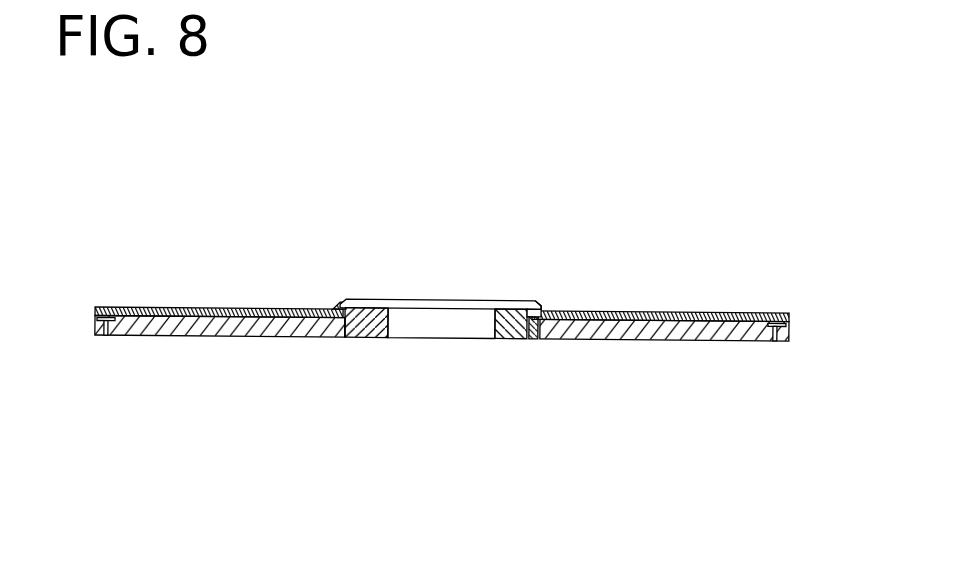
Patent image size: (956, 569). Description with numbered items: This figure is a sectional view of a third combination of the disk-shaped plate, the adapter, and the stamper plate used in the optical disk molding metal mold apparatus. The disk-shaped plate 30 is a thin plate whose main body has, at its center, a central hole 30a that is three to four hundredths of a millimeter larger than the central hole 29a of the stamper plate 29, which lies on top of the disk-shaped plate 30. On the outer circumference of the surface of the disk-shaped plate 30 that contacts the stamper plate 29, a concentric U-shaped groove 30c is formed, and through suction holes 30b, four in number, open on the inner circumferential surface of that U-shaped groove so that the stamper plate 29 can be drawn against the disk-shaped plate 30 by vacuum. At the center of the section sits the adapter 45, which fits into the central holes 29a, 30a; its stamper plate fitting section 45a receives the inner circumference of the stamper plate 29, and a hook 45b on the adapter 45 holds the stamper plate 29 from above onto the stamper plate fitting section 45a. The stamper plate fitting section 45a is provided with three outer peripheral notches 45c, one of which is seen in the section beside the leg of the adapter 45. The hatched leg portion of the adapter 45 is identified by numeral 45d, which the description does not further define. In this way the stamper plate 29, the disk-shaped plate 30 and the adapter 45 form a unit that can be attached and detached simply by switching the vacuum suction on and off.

The stamper plate 29 is at (228, 307).
The central hole of the stamper plate 29a is at (353, 301).
The disk-shaped plate 30 is at (188, 336).
The central hole of the disk-shaped plate 30a is at (348, 338).
The through suction hole 30b is at (773, 341).
The U-shaped groove 30c is at (776, 321).
The adapter 45 is at (503, 338).
The stamper plate fitting section 45a is at (555, 311).
The hook 45b is at (546, 301).
The outer peripheral notch 45c is at (533, 338).
The hub leg 45d is at (390, 316).